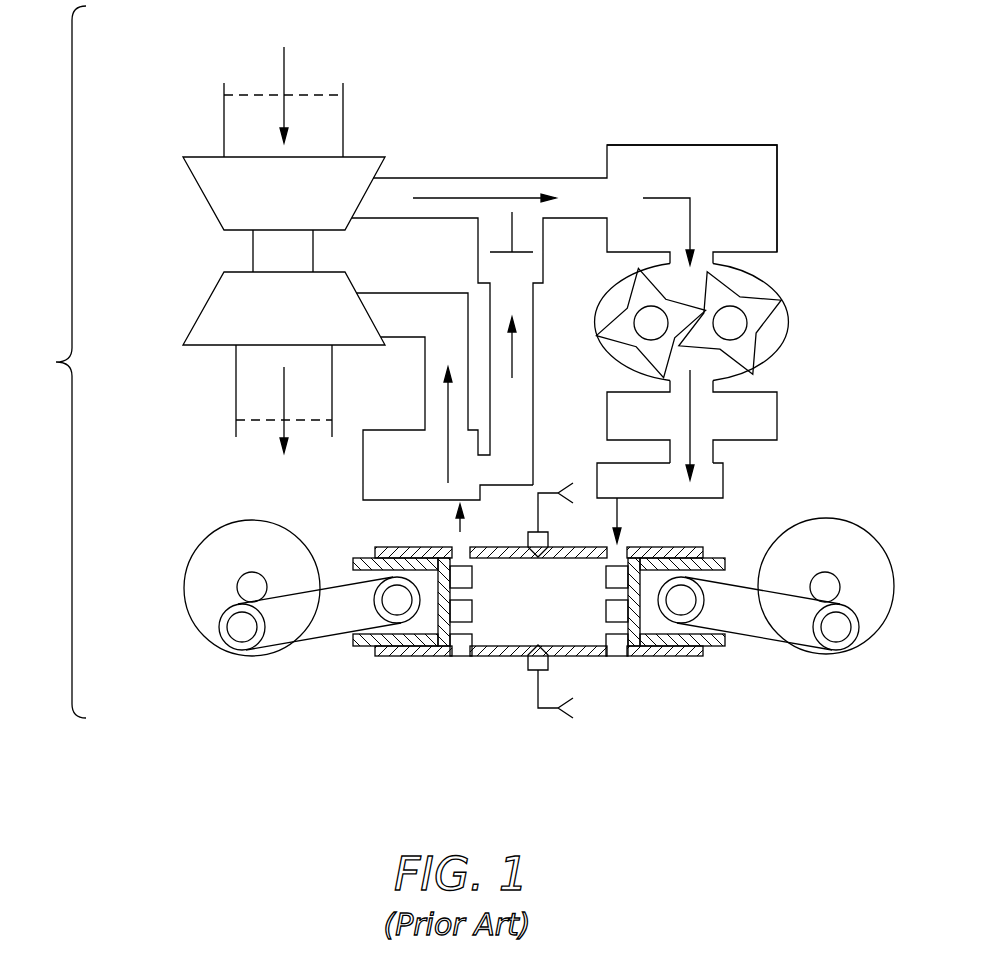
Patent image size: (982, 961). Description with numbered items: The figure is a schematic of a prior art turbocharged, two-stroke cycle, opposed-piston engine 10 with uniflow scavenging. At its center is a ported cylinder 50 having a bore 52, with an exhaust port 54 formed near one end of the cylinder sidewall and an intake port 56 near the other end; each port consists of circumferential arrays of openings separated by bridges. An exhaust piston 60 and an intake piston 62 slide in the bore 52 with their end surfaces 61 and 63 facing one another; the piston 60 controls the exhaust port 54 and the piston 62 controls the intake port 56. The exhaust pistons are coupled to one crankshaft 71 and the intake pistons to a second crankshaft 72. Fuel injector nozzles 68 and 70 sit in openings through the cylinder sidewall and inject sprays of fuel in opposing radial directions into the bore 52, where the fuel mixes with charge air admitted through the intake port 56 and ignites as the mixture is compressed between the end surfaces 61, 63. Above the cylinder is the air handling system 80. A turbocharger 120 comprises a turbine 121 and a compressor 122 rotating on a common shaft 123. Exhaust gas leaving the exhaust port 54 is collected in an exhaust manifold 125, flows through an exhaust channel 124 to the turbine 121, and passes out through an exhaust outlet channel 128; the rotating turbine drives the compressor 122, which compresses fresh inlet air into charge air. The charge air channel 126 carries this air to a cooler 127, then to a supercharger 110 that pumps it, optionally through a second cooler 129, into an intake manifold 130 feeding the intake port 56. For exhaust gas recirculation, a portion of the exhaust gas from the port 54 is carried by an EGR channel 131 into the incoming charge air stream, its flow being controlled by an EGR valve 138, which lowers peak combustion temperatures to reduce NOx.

The opposed-piston engine 10 is at (55, 362).
The ported cylinder 50 is at (486, 714).
The bore 52 is at (525, 612).
The exhaust port 54 is at (460, 656).
The intake port 56 is at (617, 656).
The exhaust piston 60 is at (429, 596).
The end surface of exhaust piston 61 is at (462, 582).
The intake piston 62 is at (665, 587).
The end surface of intake piston 63 is at (627, 580).
The fuel injector nozzle 68 is at (547, 542).
The fuel injector nozzle 70 is at (528, 660).
The crankshaft 71 is at (207, 535).
The crankshaft 72 is at (860, 524).
The air handling system 80 is at (596, 83).
The supercharger 110 is at (770, 282).
The turbocharger 120 is at (183, 257).
The turbine 121 is at (199, 318).
The compressor 122 is at (200, 190).
The common shaft 123 is at (313, 249).
The exhaust channel 124 is at (425, 345).
The exhaust manifold 125 is at (363, 500).
The charge air channel 126 is at (463, 178).
The charge air cooler 127 is at (777, 208).
The exhaust outlet channel 128 is at (236, 405).
The second charge air cooler 129 is at (777, 408).
The intake manifold 130 is at (723, 478).
The EGR channel 131 is at (553, 348).
The EGR valve 138 is at (513, 228).